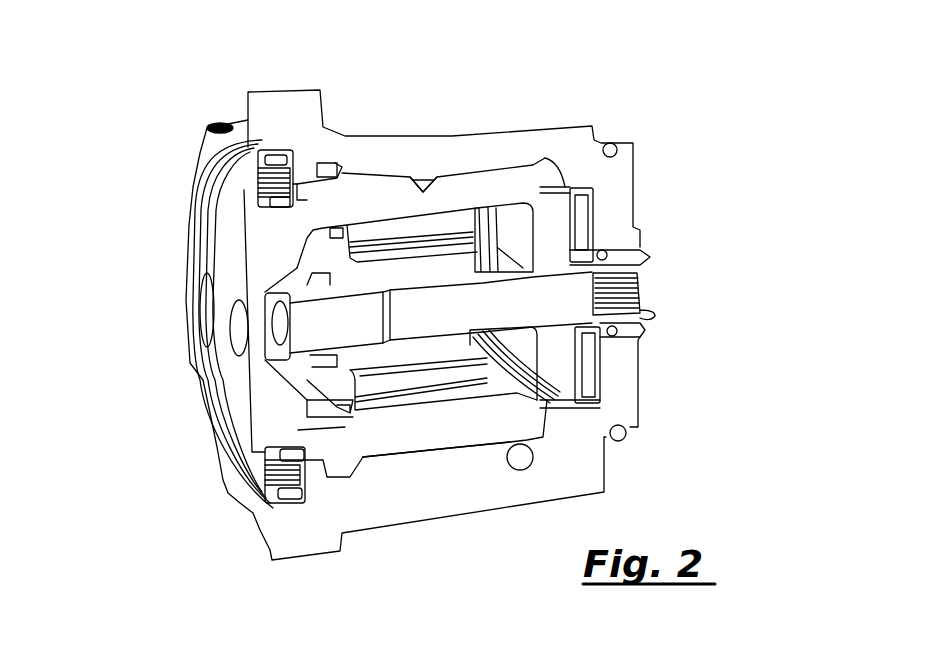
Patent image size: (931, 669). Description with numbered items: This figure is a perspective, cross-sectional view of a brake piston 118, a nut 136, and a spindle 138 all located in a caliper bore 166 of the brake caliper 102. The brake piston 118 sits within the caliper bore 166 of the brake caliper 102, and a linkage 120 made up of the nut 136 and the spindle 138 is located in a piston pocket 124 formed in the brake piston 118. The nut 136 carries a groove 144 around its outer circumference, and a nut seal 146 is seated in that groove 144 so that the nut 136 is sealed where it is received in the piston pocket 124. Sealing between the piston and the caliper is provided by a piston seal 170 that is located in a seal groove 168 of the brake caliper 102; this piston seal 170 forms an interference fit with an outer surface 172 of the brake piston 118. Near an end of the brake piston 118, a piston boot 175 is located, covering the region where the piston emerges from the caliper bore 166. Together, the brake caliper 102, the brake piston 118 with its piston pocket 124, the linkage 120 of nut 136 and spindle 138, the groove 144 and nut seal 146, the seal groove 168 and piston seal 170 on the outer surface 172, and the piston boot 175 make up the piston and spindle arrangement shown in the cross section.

The brake caliper 102 is at (447, 143).
The brake piston 118 is at (472, 183).
The linkage 120 is at (557, 207).
The piston pocket 124 is at (407, 403).
The nut 136 is at (320, 380).
The spindle 138 is at (565, 356).
The groove 144 is at (347, 400).
The nut seal 146 is at (314, 507).
The caliper bore 166 is at (427, 187).
The seal groove 168 is at (332, 175).
The piston seal 170 is at (284, 128).
The outer surface 172 is at (347, 177).
The piston boot 175 is at (250, 182).